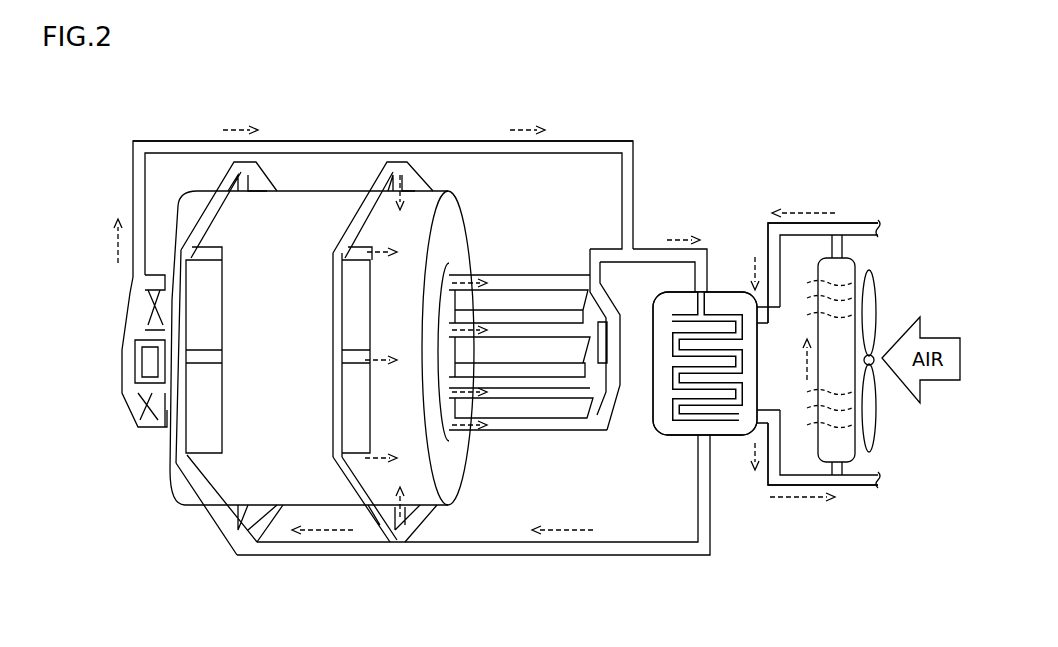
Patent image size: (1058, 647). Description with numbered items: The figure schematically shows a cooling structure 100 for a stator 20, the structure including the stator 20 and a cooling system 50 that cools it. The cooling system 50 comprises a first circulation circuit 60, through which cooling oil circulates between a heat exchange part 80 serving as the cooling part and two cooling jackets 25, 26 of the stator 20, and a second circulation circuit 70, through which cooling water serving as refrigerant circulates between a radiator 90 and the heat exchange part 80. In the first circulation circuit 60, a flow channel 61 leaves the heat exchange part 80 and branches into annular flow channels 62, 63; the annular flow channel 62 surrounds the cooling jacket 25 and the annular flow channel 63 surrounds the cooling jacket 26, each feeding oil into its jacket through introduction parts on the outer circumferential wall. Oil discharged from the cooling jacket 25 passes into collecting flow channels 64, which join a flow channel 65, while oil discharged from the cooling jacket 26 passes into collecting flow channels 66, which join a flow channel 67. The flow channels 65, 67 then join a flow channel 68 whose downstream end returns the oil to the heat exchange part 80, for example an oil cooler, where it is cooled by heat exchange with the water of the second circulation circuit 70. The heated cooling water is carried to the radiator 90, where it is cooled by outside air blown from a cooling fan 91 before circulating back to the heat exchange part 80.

The rotating electric machine unit 100 is at (865, 118).
The cooling system 50 is at (900, 150).
The first circulation circuit 60 is at (706, 200).
The second circulation circuit 70 is at (861, 201).
The stator 20 is at (478, 225).
The cooling jacket 25 is at (437, 190).
The cooling jacket 26 is at (197, 190).
The collecting flow channel 64 is at (538, 434).
The flow channel 61 is at (712, 522).
The annular flow channel 62 is at (363, 513).
The annular flow channel 63 is at (214, 520).
The flow channel 65 is at (603, 249).
The collecting flow channel 66 is at (153, 430).
The flow channel 67 is at (318, 141).
The flow channel 68 is at (653, 250).
The heat exchange part 80 is at (672, 437).
The radiator 90 is at (857, 260).
The cooling fan 91 is at (877, 297).